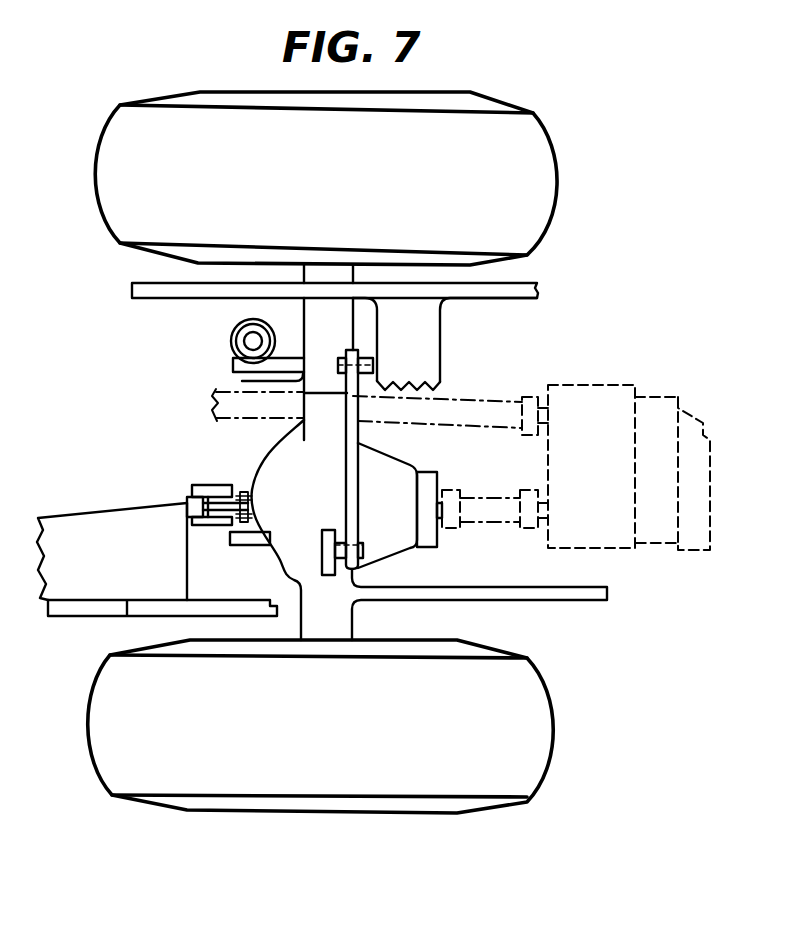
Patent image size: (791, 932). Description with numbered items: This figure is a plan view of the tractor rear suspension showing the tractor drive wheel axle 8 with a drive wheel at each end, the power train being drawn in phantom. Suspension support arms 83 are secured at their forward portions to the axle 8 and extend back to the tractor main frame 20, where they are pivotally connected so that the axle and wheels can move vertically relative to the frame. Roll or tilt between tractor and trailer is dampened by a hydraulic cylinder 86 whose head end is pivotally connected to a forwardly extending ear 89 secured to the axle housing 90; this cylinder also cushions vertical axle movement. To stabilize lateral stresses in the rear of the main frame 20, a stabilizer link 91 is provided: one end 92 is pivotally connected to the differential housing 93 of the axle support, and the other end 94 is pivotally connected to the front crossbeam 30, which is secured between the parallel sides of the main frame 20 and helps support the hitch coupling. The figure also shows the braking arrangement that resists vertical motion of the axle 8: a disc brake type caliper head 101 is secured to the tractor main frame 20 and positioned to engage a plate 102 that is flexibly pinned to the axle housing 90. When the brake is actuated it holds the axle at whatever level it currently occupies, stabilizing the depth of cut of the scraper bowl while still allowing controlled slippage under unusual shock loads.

The tractor drive wheel axle 8 is at (303, 311).
The front crossbeam 30 is at (441, 339).
The axle suspension, roll or tilt dampening hydraulic cylinder 86 is at (231, 338).
The forwardly extending ear 89 is at (233, 372).
The other end of stabilizer link 94 is at (337, 366).
The stabilizer link 91 is at (345, 460).
The axle housing 90 is at (312, 528).
The differential housing 93 is at (302, 421).
The one end of stabilizer link 92 is at (327, 576).
The suspension support arms 83 is at (536, 601).
The tractor main frame 20 is at (130, 570).
The disc brake type caliper head 101 is at (236, 455).
The plate 102 is at (218, 525).